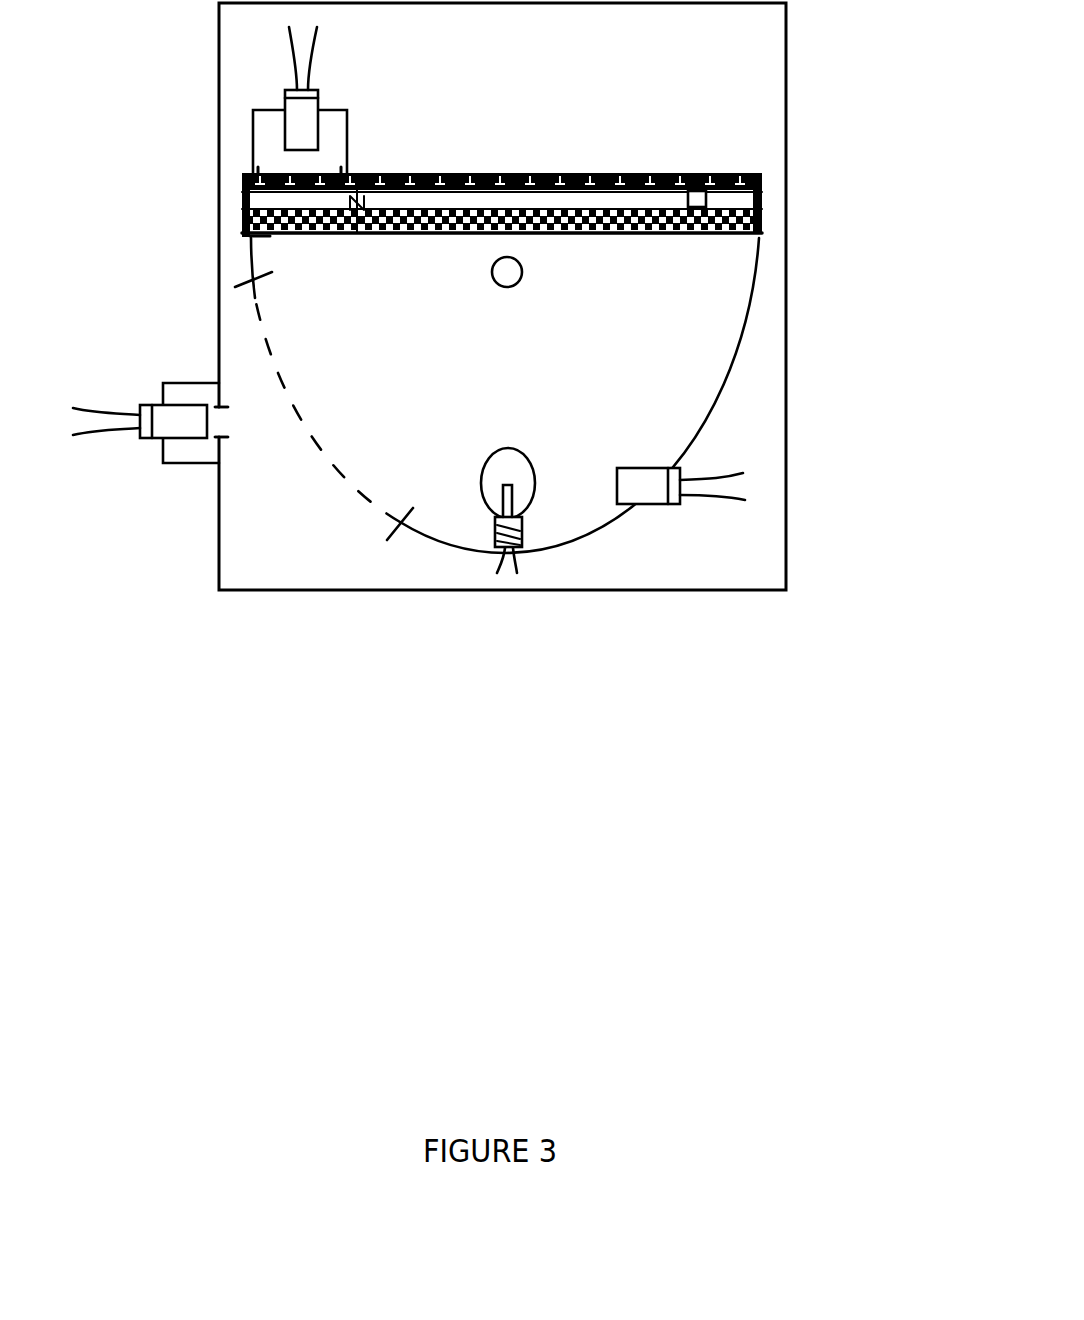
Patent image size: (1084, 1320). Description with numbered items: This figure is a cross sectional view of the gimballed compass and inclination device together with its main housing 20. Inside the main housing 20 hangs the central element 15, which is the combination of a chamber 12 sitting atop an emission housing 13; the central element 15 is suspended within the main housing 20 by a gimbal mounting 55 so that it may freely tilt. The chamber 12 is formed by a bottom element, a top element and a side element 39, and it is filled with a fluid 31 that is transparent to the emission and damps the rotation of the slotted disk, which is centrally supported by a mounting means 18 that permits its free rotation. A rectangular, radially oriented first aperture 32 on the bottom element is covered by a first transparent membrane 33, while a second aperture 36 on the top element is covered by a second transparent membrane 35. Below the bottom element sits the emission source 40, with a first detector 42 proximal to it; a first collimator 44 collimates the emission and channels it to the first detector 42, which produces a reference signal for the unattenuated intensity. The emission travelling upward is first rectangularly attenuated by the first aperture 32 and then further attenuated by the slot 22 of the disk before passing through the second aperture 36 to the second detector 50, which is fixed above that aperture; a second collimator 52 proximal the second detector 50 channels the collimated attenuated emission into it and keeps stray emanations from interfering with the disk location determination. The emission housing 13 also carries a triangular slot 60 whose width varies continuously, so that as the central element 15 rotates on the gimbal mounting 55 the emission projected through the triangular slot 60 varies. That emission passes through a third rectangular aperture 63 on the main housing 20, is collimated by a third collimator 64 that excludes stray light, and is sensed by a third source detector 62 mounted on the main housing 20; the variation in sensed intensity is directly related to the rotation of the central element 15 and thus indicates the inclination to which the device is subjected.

The chamber 12 is at (530, 175).
The emission housing 13 is at (720, 340).
The central element 15 is at (763, 232).
The mounting means 18 is at (507, 225).
The main housing 20 is at (786, 408).
The slot 22 is at (832, 183).
The fluid 31 is at (648, 232).
The first aperture 32 is at (263, 239).
The first transparent membrane 33 is at (302, 238).
The second transparent membrane 35 is at (298, 175).
The second aperture 36 is at (258, 168).
The side element 39 is at (700, 170).
The emission source 40 is at (484, 495).
The first detector 42 is at (673, 492).
The first collimator 44 is at (637, 487).
The second detector 50 is at (312, 91).
The second collimator 52 is at (303, 127).
The gimbal mounting 55 is at (512, 282).
The triangular slot 60 is at (290, 392).
The third source detector 62 is at (140, 437).
The third rectangular aperture 63 is at (227, 437).
The third collimator 64 is at (188, 425).